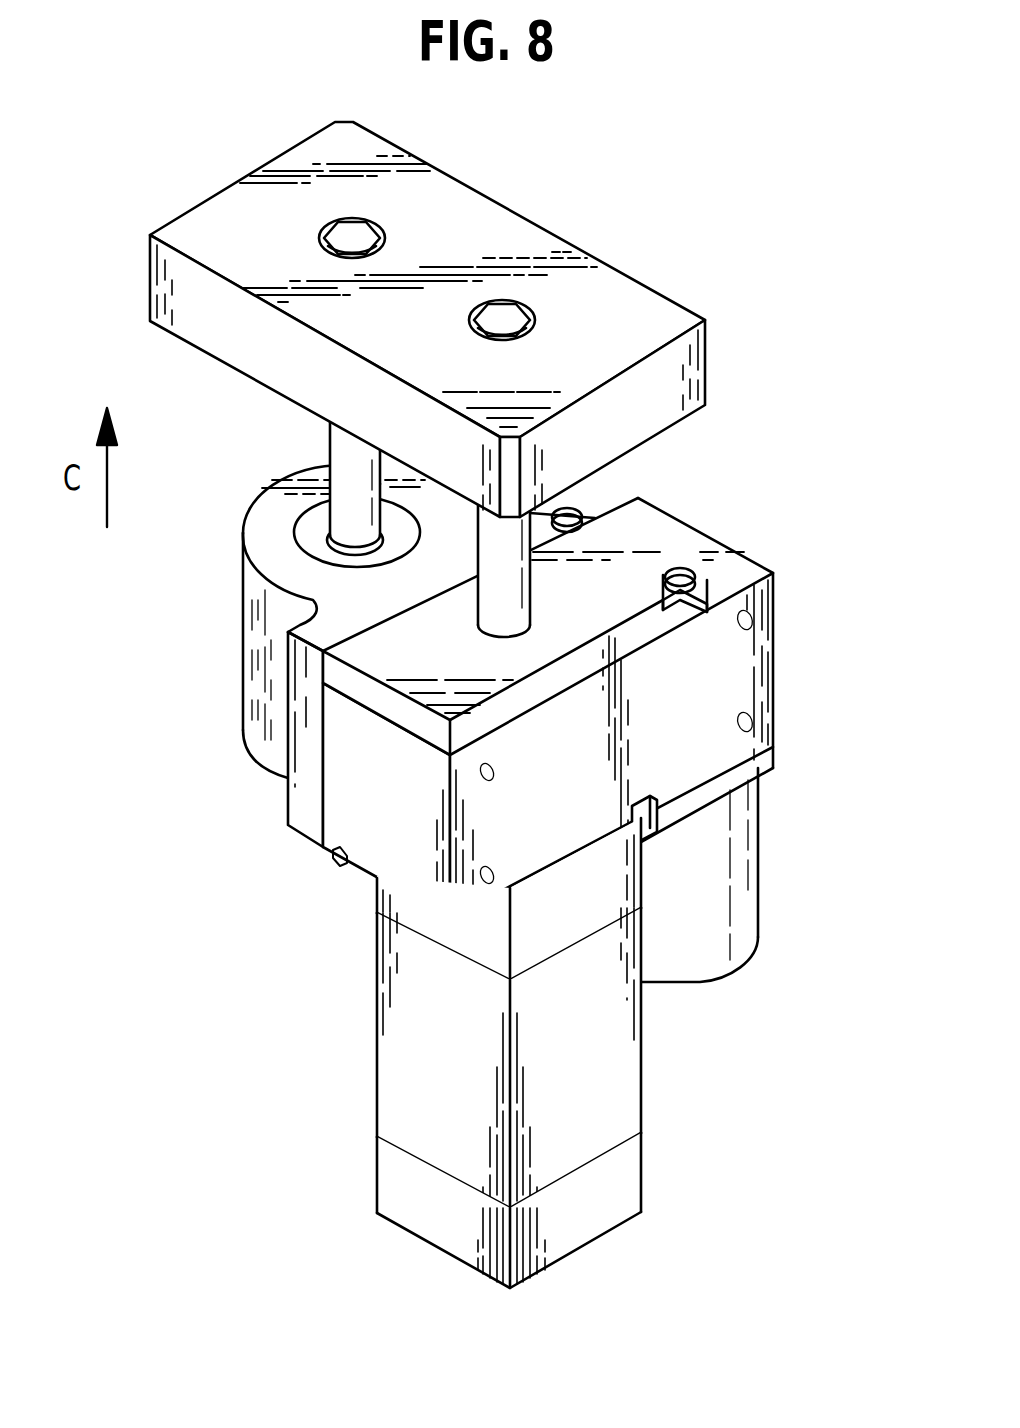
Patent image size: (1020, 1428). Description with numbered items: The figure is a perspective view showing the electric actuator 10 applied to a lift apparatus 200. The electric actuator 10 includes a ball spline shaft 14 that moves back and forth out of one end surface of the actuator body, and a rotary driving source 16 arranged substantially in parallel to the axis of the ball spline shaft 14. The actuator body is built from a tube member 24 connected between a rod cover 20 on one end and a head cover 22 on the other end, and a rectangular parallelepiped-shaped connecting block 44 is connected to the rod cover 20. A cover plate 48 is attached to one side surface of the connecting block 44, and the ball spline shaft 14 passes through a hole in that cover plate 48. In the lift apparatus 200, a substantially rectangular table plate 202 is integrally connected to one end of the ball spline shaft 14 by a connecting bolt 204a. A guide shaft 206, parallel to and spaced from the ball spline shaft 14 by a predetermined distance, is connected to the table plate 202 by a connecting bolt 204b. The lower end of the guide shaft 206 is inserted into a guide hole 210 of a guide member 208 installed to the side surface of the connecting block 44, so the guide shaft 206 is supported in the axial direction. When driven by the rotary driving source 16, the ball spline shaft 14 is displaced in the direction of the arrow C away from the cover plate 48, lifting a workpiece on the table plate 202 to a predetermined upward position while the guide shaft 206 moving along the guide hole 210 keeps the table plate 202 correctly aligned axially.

The electric actuator 10 is at (662, 1073).
The ball spline shaft 14 is at (423, 557).
The rotary driving source 16 is at (720, 870).
The rod cover 20 is at (420, 950).
The head cover 22 is at (420, 1190).
The tube member 24 is at (420, 1085).
The connecting block 44 is at (720, 686).
The cover plate 48 is at (420, 657).
The lift apparatus 200 is at (727, 177).
The table plate 202 is at (428, 196).
The connecting bolt 204a is at (505, 318).
The connecting bolt 204b is at (345, 238).
The guide shaft 206 is at (345, 456).
The guide member 208 is at (265, 645).
The guide hole 210 is at (335, 530).